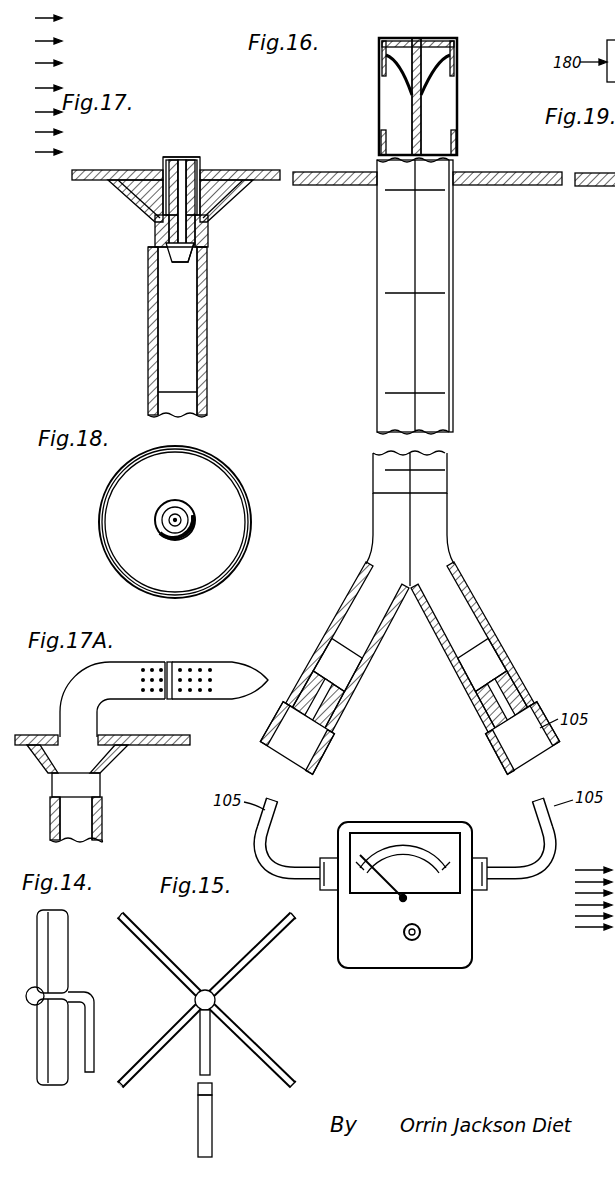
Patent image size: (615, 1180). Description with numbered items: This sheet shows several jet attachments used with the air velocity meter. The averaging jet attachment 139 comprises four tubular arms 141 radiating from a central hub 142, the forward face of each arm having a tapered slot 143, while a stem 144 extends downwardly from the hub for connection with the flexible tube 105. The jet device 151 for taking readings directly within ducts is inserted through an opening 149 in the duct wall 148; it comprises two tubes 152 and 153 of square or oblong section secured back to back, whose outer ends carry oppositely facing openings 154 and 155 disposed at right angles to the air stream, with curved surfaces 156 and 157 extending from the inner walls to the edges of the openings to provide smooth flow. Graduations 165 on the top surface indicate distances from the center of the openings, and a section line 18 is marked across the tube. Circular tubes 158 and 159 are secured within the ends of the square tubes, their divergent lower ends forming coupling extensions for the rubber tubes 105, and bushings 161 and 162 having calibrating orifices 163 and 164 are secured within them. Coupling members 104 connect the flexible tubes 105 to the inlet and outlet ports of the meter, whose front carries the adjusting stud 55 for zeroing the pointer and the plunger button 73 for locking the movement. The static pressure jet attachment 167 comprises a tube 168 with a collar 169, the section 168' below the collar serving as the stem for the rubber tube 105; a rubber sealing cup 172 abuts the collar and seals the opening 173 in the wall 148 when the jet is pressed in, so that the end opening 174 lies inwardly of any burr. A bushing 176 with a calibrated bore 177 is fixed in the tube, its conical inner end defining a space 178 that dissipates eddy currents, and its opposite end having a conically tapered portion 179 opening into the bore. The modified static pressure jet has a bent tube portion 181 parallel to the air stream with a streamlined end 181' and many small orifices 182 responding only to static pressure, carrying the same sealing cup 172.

In FIG. 17, the wall of duct 148 is at (75, 180).
In FIG. 16, the wall of duct 148 is at (340, 186).
In FIG. 17, the sealing member 172 is at (228, 210).
In FIG. 18, the sealing member 172 is at (122, 578).
In FIG. 17A, the sealing member 172 is at (110, 762).
In FIG. 17, the bushing 176 is at (133, 200).
In FIG. 17, the calibrated bore 177 is at (150, 214).
In FIG. 18, the calibrated bore 177 is at (179, 521).
In FIG. 17, the tube 168 is at (153, 181).
In FIG. 18, the tube 168 is at (172, 533).
In FIG. 17, the opening 173 is at (203, 170).
In FIG. 17, the collar 169 is at (210, 240).
In FIG. 17A, the collar 169 is at (102, 798).
In FIG. 17, the opening 174 is at (176, 158).
In FIG. 17, the space 178 is at (190, 158).
In FIG. 17, the conically tapered portion 179 is at (160, 258).
In FIG. 17, the section of tube 168' is at (221, 260).
In FIG. 17, the flexible tube 105 is at (150, 330).
In FIG. 17A, the flexible tube 105 is at (104, 831).
In FIG. 16, the flexible tube 105 is at (313, 661).
In FIG. 17, the jet attachment 167 is at (130, 240).
In FIG. 18, the jet attachment 167 is at (90, 527).
In FIG. 17A, the tube portion 181 is at (136, 682).
In FIG. 17A, the stream lined end 181' is at (220, 665).
In FIG. 17A, the small orifices 182 is at (170, 700).
In FIG. 14, the stem 144 is at (94, 1040).
In FIG. 15, the tapered slot 143 is at (150, 933).
In FIG. 15, the central hub 142 is at (218, 1000).
In FIG. 15, the tubular arms 141 is at (178, 975).
In FIG. 15, the averaging jet attachment 139 is at (203, 980).
In FIG. 16, the jet device 151 is at (416, 38).
In FIG. 16, the curved surface 156 is at (392, 62).
In FIG. 16, the curved surface 157 is at (445, 62).
In FIG. 16, the opening 154 is at (376, 108).
In FIG. 16, the opening 155 is at (464, 108).
In FIG. 16, the tube 152 is at (383, 146).
In FIG. 16, the tube 153 is at (455, 146).
In FIG. 16, the opening 149 is at (455, 186).
In FIG. 16, the graduations 165 is at (410, 388).
In FIG. 16, the section line 18 is at (410, 518).
In FIG. 16, the tube 158 is at (375, 548).
In FIG. 16, the tube 159 is at (447, 549).
In FIG. 16, the bushing 161 is at (345, 732).
In FIG. 16, the bushing 162 is at (475, 732).
In FIG. 16, the calibrating orifice 163 is at (312, 770).
In FIG. 16, the calibrating orifice 164 is at (508, 770).
In FIG. 16, the coupling member 104 is at (326, 858).
In FIG. 16, the adjusting stud 55 is at (407, 900).
In FIG. 16, the plunger button 73 is at (421, 934).